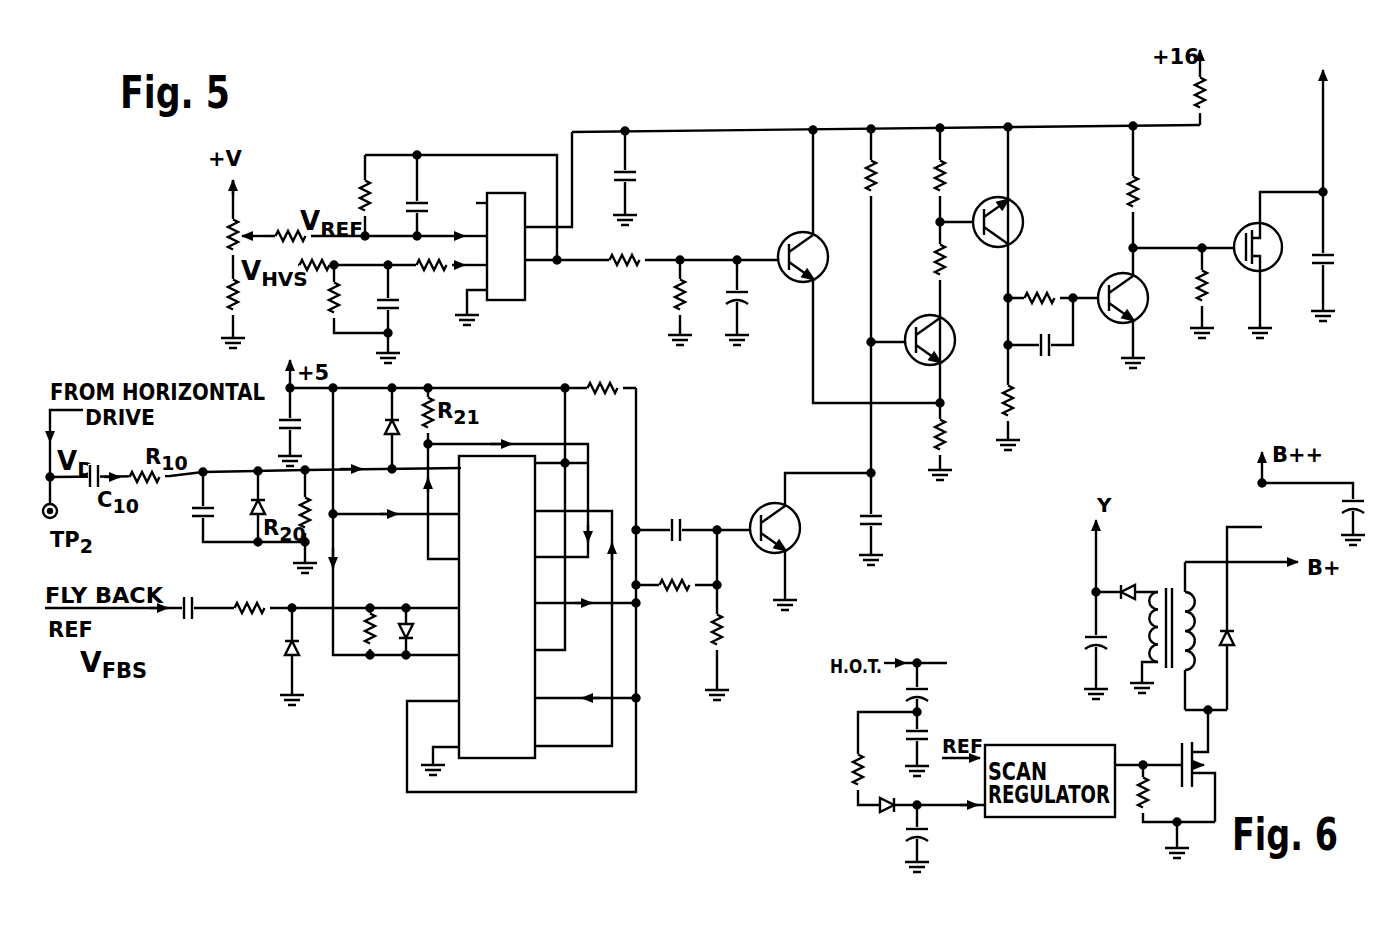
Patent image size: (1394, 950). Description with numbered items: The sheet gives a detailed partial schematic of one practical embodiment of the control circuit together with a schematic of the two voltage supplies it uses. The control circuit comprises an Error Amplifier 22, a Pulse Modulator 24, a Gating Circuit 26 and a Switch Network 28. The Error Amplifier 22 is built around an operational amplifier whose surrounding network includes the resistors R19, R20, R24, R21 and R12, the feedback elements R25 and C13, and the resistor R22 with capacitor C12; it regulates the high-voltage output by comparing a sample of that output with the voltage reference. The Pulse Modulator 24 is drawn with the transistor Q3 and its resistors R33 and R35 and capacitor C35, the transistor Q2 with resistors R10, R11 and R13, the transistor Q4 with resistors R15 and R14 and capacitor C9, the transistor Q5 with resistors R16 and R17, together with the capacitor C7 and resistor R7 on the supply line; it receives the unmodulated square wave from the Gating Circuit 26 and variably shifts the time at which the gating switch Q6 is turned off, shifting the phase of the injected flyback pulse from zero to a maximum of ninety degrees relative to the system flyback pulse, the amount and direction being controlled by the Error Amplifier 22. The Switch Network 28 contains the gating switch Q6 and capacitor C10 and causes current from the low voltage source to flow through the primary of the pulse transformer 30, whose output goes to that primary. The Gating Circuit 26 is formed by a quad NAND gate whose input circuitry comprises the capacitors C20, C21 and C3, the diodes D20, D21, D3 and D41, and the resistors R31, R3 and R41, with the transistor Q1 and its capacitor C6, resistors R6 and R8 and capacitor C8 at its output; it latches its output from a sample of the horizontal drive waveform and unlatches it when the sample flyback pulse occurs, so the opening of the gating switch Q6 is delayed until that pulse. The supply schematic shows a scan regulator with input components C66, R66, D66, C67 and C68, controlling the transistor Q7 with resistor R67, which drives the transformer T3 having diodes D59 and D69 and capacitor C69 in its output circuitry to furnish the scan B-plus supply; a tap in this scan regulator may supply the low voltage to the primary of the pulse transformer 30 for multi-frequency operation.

In FIG. 5, the Error Amplifier 22 is at (545, 319).
In FIG. 5, the Pulse Modulator 24 is at (822, 268).
In FIG. 5, the Gating Circuit 26 is at (277, 718).
In FIG. 5, the Switch Network 28 is at (1257, 297).
In FIG. 5, the pulse transformer 30 is at (1294, 108).
In FIG. 5, the potentiometer R19 is at (224, 259).
In FIG. 5, the resistor R20 is at (212, 313).
In FIG. 5, the resistor R24 is at (301, 224).
In FIG. 5, the resistor R25 is at (387, 195).
In FIG. 5, the capacitor C13 is at (434, 195).
In FIG. 5, the resistor R21 is at (325, 254).
In FIG. 5, the resistor R12 is at (429, 279).
In FIG. 5, the resistor R22 is at (336, 301).
In FIG. 5, the capacitor C12 is at (409, 314).
In FIG. 5, the capacitor C7 is at (641, 178).
In FIG. 5, the resistor R33 is at (653, 246).
In FIG. 5, the resistor R35 is at (662, 302).
In FIG. 5, the capacitor C35 is at (760, 302).
In FIG. 5, the transistor Q3 is at (738, 392).
In FIG. 5, the resistor R10 is at (851, 342).
In FIG. 5, the transistor Q2 is at (913, 330).
In FIG. 5, the resistor R11 is at (924, 265).
In FIG. 5, the resistor R13 is at (927, 441).
In FIG. 5, the transistor Q4 is at (994, 217).
In FIG. 5, the resistor R15 is at (1028, 288).
In FIG. 5, the resistor R14 is at (1059, 283).
In FIG. 5, the capacitor C9 is at (1042, 336).
In FIG. 5, the transistor Q5 is at (1137, 308).
In FIG. 5, the resistor R16 is at (1186, 187).
In FIG. 5, the resistor R17 is at (1222, 293).
In FIG. 5, the gating switch Q6 is at (1278, 265).
In FIG. 5, the capacitor C10 is at (1311, 256).
In FIG. 5, the resistor R7 is at (1184, 87).
In FIG. 5, the capacitor C20 is at (232, 510).
In FIG. 5, the diode D20 is at (236, 506).
In FIG. 5, the capacitor C21 is at (270, 427).
In FIG. 5, the diode D21 is at (375, 428).
In FIG. 5, the resistor R31 is at (604, 403).
In FIG. 5, the capacitor C3 is at (204, 622).
In FIG. 5, the resistor R3 is at (252, 596).
In FIG. 5, the diode D3 is at (279, 656).
In FIG. 5, the resistor R41 is at (368, 648).
In FIG. 5, the diode D41 is at (402, 648).
In FIG. 5, the capacitor C6 is at (698, 517).
In FIG. 5, the resistor R6 is at (676, 570).
In FIG. 5, the resistor R8 is at (703, 615).
In FIG. 5, the transistor Q1 is at (804, 541).
In FIG. 5, the capacitor C8 is at (890, 539).
In FIG. 6, the capacitor C66 is at (942, 687).
In FIG. 6, the resistor R66 is at (834, 775).
In FIG. 6, the diode D66 is at (886, 815).
In FIG. 6, the capacitor C67 is at (898, 744).
In FIG. 6, the capacitor C68 is at (942, 838).
In FIG. 6, the resistor R67 is at (1176, 811).
In FIG. 6, the FET Q7 is at (1215, 766).
In FIG. 6, the diode D59 is at (1252, 618).
In FIG. 6, the transformer T3 is at (1162, 636).
In FIG. 6, the diode D69 is at (1131, 601).
In FIG. 6, the capacitor C69 is at (1073, 645).